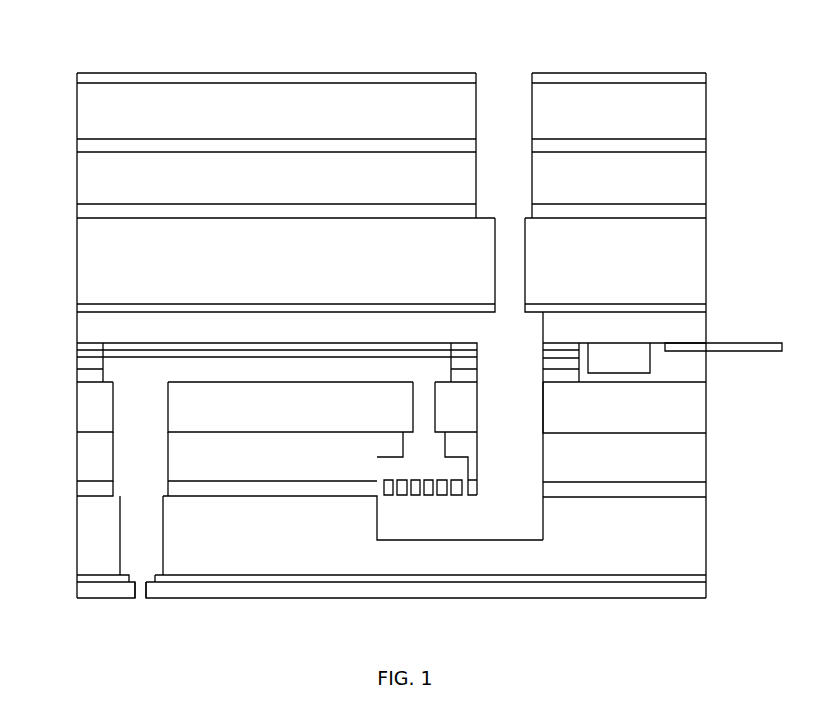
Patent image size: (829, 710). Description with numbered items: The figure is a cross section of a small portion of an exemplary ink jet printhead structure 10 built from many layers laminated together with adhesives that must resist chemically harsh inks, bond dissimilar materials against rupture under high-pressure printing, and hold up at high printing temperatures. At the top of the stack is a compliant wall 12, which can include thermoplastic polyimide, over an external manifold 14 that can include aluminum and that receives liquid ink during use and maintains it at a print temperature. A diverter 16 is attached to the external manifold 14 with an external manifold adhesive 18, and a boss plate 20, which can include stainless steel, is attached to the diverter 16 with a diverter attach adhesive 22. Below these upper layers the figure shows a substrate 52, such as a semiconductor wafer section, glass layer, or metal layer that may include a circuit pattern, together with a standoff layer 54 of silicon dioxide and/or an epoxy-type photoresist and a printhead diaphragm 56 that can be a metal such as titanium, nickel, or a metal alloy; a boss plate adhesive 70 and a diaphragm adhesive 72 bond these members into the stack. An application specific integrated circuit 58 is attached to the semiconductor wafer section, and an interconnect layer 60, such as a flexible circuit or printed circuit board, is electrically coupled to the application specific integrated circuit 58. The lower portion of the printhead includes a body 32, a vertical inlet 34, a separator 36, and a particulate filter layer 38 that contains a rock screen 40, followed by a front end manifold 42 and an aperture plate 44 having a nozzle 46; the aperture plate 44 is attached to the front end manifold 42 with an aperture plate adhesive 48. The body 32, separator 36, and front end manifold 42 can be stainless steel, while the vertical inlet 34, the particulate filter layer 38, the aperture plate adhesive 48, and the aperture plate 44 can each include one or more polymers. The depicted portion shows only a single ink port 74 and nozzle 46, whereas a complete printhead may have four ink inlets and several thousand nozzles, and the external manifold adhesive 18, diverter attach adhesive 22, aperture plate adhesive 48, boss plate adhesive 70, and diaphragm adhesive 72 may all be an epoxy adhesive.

The ink jet printhead structure 10 is at (262, 58).
The compliant wall 12 is at (77, 78).
The external manifold 14 is at (279, 123).
The diverter 16 is at (279, 188).
The external manifold adhesive 18 is at (77, 146).
The boss plate 20 is at (279, 272).
The diverter attach adhesive 22 is at (77, 212).
The body 32 is at (77, 376).
The vertical inlet 34 is at (86, 418).
The separator 36 is at (86, 465).
The particulate filter layer 38 is at (77, 489).
The rock screen 40 is at (384, 502).
The front end manifold 42 is at (77, 533).
The aperture plate 44 is at (90, 600).
The nozzle 46 is at (140, 603).
The aperture plate adhesive 48 is at (77, 579).
The substrate 52 is at (276, 339).
The standoff layer 54 is at (77, 347).
The printhead diaphragm 56 is at (77, 353).
The application specific integrated circuit 58 is at (610, 368).
The interconnect layer 60 is at (752, 343).
The boss plate adhesive 70 is at (77, 308).
The diaphragm adhesive 72 is at (77, 364).
The ink port 74 is at (505, 95).